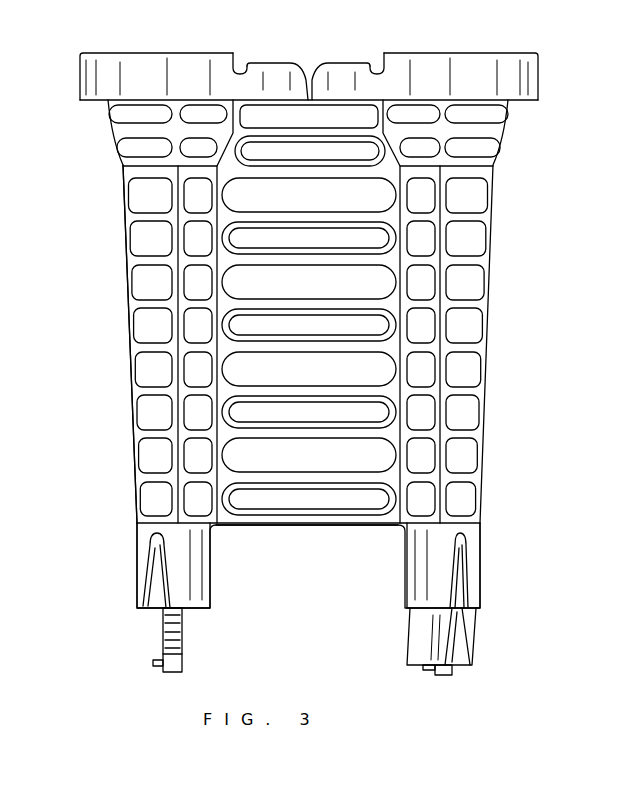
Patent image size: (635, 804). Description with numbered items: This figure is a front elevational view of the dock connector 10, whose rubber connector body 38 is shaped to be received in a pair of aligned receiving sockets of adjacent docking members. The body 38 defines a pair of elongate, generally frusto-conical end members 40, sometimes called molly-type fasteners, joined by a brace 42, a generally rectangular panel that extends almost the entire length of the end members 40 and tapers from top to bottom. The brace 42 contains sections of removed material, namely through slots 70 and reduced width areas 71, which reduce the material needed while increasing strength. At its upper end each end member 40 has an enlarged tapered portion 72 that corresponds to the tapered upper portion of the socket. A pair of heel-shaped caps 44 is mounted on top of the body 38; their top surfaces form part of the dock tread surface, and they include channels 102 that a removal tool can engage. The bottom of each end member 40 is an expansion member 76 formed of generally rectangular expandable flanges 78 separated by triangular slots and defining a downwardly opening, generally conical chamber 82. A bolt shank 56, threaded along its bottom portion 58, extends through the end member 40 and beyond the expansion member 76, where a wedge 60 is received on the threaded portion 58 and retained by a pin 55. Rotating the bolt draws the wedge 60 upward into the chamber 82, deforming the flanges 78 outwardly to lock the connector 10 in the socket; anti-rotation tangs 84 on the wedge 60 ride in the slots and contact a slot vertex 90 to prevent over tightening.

The connector 10 is at (517, 283).
The connector body 38 is at (128, 253).
The end members 40 is at (465, 324).
The brace 42 is at (321, 526).
The caps 44 is at (147, 82).
The pin 55 is at (160, 667).
The shank 56 is at (182, 632).
The threaded portion 58 is at (163, 634).
The wedge 60 is at (425, 641).
The through slots 70 is at (385, 364).
The reduced width areas 71 is at (375, 410).
The enlarged tapered portion 72 is at (505, 130).
The expansion member 76 is at (483, 548).
The expandable flanges 78 is at (198, 566).
The chamber 82 is at (462, 565).
The anti-rotation tangs 84 is at (463, 642).
The vertex 90 is at (150, 495).
The channels 102 is at (241, 72).